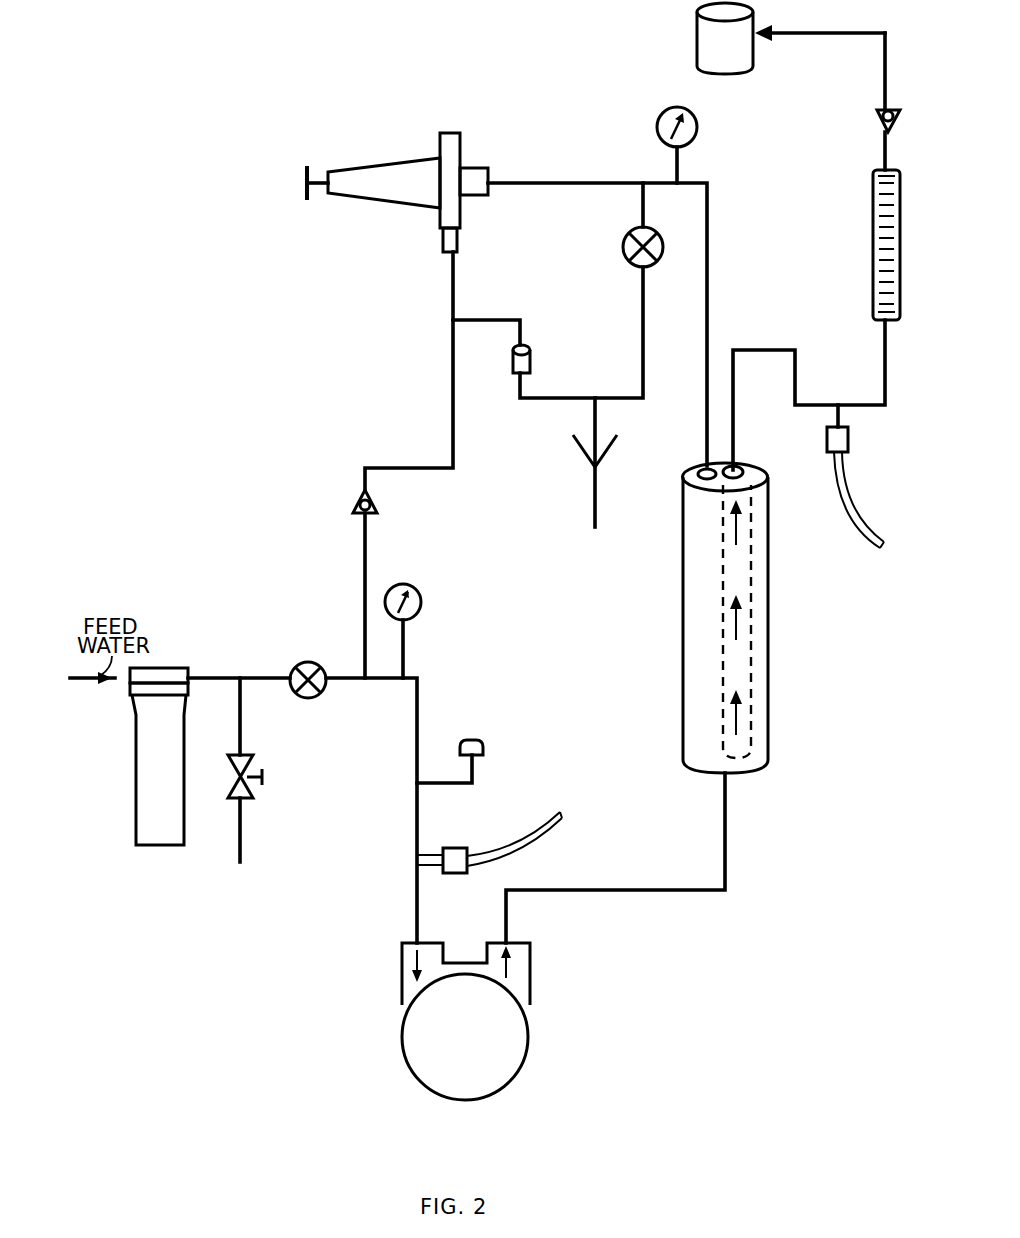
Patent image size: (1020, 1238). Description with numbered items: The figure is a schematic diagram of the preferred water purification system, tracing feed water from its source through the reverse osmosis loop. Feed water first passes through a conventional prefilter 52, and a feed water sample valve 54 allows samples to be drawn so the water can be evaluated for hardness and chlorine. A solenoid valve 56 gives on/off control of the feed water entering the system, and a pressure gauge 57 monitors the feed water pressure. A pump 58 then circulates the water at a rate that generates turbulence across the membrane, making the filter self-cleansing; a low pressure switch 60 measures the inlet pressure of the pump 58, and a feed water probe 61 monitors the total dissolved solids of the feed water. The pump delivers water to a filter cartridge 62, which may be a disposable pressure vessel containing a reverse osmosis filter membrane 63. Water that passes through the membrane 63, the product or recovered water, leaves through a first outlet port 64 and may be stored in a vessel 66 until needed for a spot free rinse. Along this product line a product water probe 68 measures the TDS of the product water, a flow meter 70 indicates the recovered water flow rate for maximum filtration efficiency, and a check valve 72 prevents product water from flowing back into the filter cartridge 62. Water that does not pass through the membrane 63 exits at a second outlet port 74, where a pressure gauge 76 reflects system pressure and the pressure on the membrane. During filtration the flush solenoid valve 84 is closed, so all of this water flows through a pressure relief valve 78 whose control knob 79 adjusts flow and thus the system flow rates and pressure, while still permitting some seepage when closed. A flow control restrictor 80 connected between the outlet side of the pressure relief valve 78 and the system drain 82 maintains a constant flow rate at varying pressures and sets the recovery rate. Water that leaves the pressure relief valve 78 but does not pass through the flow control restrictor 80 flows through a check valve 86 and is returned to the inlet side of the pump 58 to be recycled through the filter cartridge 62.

The prefilter 52 is at (135, 763).
The feed water sample valve 54 is at (242, 760).
The solenoid valve 56 is at (310, 662).
The pressure gauge 57 is at (419, 594).
The pump 58 is at (528, 1040).
The low pressure switch 60 is at (484, 748).
The feed water probe 61 is at (458, 848).
The filter cartridge 62 is at (768, 660).
The reverse osmosis filter membrane 63 is at (757, 568).
The first outlet port 64 is at (735, 466).
The vessel 66 is at (697, 29).
The product water probe 68 is at (848, 442).
The flow meter 70 is at (873, 207).
The check valve 72 is at (878, 124).
The second outlet port 74 is at (703, 470).
The pressure gauge 76 is at (659, 120).
The pressure relief valve 78 is at (362, 196).
The control knob 79 is at (304, 167).
The flow control restrictor 80 is at (532, 360).
The system drain 82 is at (600, 487).
The flush solenoid valve 84 is at (657, 238).
The check valve 86 is at (356, 499).